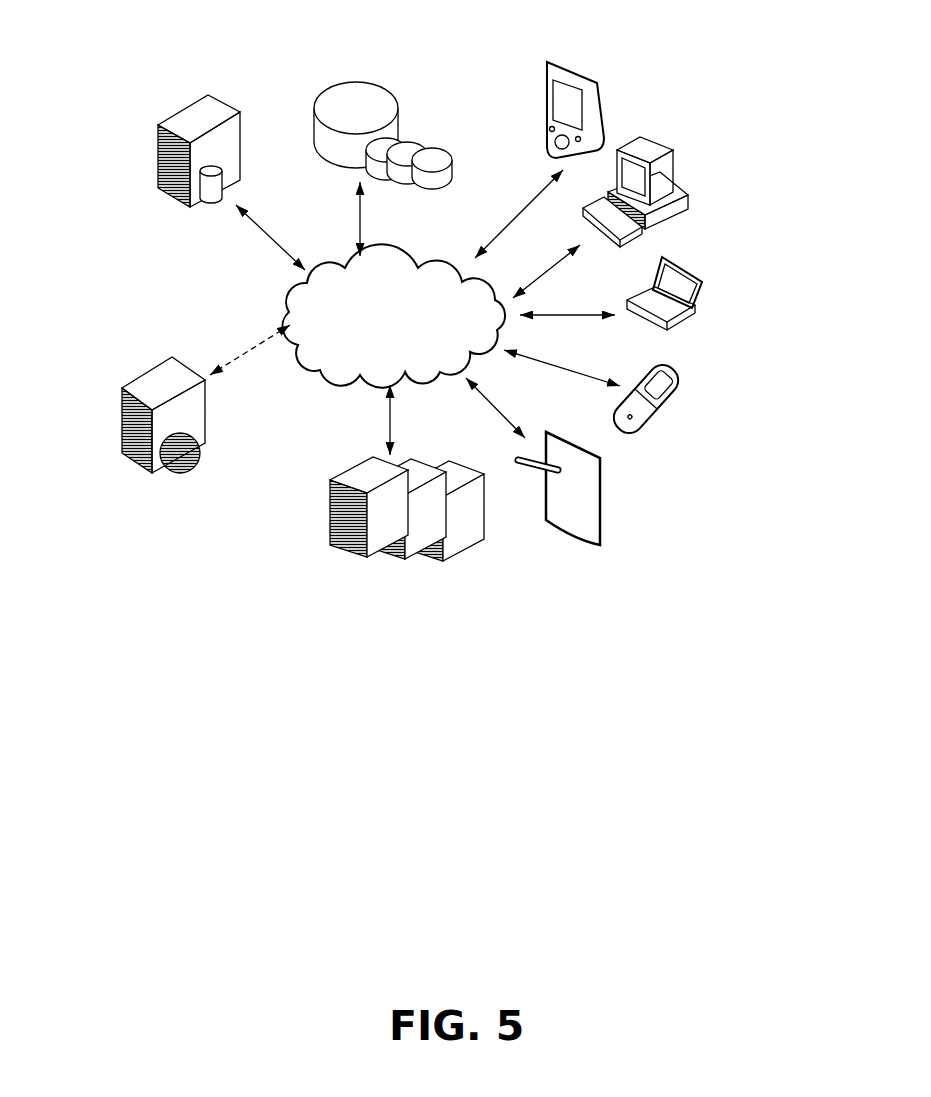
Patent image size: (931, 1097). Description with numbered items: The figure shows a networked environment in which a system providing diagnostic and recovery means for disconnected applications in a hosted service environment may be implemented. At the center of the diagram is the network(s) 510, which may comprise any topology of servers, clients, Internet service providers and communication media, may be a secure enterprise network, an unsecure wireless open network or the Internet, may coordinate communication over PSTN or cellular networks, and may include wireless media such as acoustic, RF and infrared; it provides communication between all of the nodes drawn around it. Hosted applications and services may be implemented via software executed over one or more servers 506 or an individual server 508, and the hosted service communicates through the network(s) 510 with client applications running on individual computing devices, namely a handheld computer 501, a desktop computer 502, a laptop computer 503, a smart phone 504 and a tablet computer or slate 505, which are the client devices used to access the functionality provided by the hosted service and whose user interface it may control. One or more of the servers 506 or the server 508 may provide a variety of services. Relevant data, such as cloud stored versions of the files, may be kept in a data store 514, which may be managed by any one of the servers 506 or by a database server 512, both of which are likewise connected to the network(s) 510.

The handheld computer 501 is at (604, 64).
The desktop computer 502 is at (688, 150).
The laptop computer 503 is at (706, 257).
The smart phone 504 is at (675, 368).
The tablet computer 505 is at (614, 478).
The servers 506 is at (360, 464).
The individual server 508 is at (145, 368).
The network(s) 510 is at (400, 244).
The database server 512 is at (212, 217).
The data store 514 is at (372, 58).